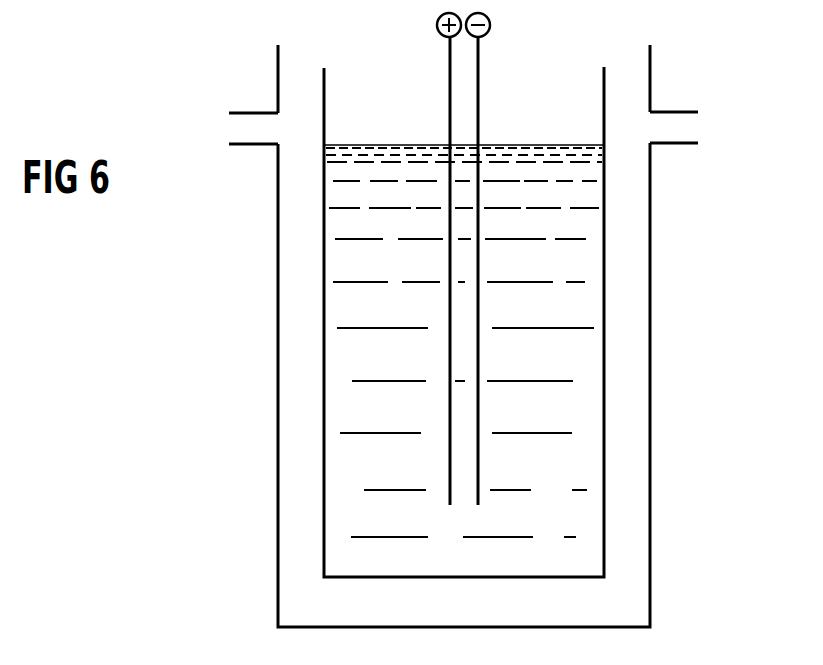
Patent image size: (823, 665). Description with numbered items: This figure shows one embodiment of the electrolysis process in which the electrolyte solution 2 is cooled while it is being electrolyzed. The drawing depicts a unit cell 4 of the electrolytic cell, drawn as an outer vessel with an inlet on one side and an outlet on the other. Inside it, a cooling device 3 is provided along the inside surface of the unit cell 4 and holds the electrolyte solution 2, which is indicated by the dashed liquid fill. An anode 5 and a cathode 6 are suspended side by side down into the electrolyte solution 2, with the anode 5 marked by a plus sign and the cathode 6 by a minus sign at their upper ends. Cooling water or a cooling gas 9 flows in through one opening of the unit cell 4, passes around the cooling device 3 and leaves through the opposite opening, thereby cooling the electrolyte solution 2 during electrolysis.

The electrolyte solution 2 is at (421, 364).
The cooling device 3 is at (632, 494).
The unit cell 4 is at (278, 502).
The anode 5 is at (449, 96).
The cathode 6 is at (479, 97).
The cooling water or cooling gas 9 is at (222, 128).